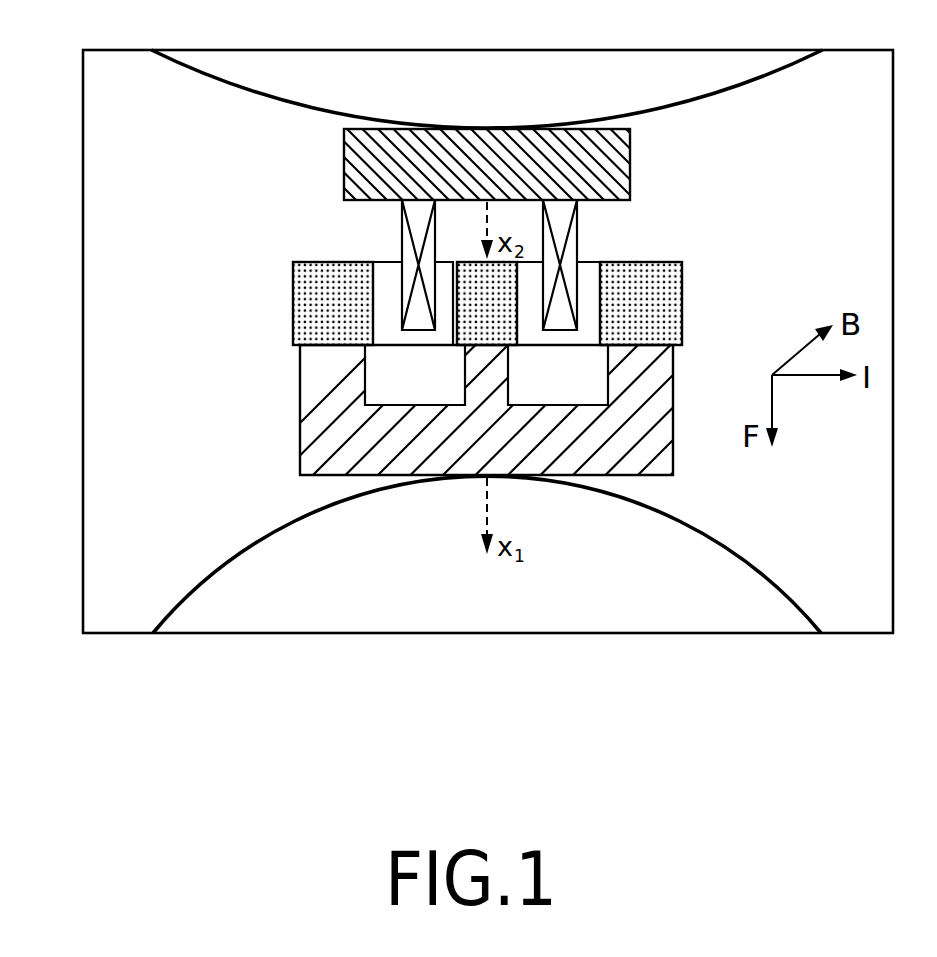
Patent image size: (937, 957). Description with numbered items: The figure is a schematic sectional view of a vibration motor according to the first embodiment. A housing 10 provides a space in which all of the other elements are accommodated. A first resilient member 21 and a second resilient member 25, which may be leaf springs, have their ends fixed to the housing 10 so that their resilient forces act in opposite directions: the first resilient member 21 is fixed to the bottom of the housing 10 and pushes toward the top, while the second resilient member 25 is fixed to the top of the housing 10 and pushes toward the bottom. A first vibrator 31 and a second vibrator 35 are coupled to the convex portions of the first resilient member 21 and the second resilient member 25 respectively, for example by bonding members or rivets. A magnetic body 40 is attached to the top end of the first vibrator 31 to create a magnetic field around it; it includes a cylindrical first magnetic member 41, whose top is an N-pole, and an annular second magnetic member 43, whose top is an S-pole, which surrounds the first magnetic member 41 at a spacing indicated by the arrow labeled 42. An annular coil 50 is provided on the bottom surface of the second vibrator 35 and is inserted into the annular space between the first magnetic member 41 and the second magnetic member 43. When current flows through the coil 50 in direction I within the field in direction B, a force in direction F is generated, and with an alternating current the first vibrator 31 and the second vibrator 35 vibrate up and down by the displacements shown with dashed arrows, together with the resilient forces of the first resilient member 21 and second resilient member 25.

The housing 10 is at (83, 343).
The first resilient member 21 is at (773, 583).
The second resilient member 25 is at (723, 95).
The first vibrator 31 is at (300, 422).
The second vibrator 35 is at (344, 160).
The magnetic body 40 is at (397, 323).
The first magnetic member 41 is at (460, 347).
The gap 42 is at (388, 272).
The second magnetic member 43 is at (293, 288).
The coil 50 is at (577, 228).